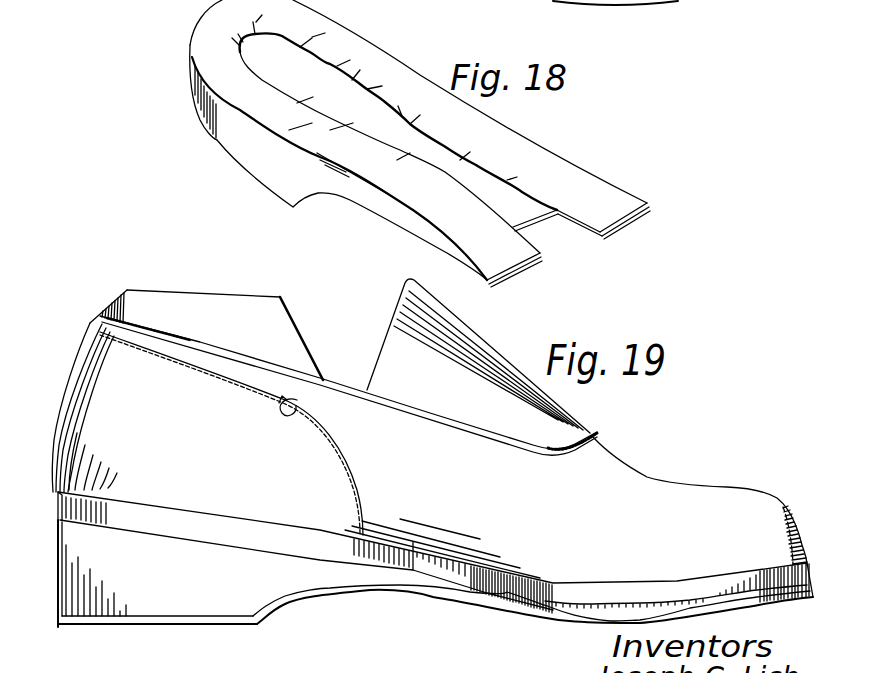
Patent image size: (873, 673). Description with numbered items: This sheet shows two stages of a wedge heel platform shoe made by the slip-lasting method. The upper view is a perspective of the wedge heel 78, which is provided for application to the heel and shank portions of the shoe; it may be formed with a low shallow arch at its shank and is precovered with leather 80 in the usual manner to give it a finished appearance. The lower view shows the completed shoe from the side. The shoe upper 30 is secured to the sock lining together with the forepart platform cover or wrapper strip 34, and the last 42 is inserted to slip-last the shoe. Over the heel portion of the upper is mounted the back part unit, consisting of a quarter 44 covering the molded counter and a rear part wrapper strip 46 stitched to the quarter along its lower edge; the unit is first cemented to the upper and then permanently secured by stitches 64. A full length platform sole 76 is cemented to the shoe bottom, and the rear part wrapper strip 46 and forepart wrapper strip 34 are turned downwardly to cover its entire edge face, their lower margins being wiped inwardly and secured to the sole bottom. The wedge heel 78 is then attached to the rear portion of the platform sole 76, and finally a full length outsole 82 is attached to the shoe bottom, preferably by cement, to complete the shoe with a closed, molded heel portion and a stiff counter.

In FIG. 19, the shoe upper 30 is at (673, 500).
In FIG. 19, the forepart platform cover or wrapper strip 34 is at (772, 582).
In FIG. 19, the last 42 is at (490, 370).
In FIG. 19, the quarter 44 is at (93, 365).
In FIG. 19, the rear part wrapper strip 46 is at (65, 508).
In FIG. 19, the stitches 64 is at (297, 400).
In FIG. 18, the full length platform sole 76 is at (684, 0).
In FIG. 18, the wedge heel 78 is at (192, 47).
In FIG. 19, the wedge heel 78 is at (58, 595).
In FIG. 18, the leather 80 is at (243, 153).
In FIG. 19, the leather 80 is at (217, 592).
In FIG. 19, the full length outsole 82 is at (573, 617).